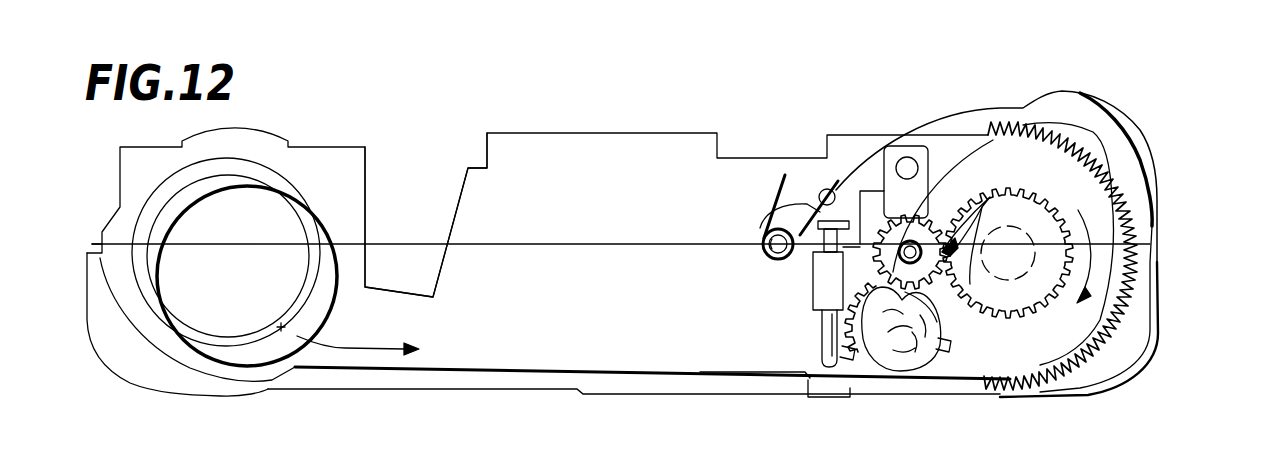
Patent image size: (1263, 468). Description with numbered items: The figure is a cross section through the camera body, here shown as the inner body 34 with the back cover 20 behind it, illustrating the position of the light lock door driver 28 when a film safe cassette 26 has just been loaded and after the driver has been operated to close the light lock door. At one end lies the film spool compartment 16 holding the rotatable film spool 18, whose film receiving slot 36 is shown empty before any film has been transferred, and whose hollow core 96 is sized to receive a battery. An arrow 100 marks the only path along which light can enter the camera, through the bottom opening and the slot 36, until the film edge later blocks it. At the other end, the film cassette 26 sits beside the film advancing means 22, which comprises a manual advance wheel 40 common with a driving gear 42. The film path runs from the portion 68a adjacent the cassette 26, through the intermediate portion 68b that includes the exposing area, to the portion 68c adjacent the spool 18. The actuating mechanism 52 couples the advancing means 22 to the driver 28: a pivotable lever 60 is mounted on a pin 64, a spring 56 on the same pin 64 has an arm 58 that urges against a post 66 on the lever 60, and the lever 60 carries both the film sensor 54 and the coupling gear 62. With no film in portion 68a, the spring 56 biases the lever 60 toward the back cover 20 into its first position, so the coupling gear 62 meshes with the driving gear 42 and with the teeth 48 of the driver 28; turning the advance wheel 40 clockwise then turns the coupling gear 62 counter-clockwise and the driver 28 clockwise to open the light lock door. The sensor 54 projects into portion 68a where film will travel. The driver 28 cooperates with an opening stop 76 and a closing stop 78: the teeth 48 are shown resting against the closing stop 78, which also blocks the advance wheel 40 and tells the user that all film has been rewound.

The film spool compartment 16 is at (132, 177).
The film spool 18 is at (186, 307).
The back cover 20 is at (537, 392).
The film advancing means 22 is at (1083, 135).
The film cassette 26 is at (965, 178).
The light lock door driver 28 is at (900, 366).
The inner body 34 is at (515, 140).
The film receiving slot 36 is at (281, 324).
The manual advance wheel 40 is at (1093, 190).
The driving gear 42 is at (1117, 350).
The teeth 48 is at (885, 378).
The actuating mechanism 52 is at (718, 205).
The film sensor 54 is at (815, 282).
The spring 56 is at (780, 197).
The arm 58 is at (792, 170).
The pivotable lever 60 is at (896, 206).
The coupling gear 62 is at (965, 345).
The pin 64 is at (760, 237).
The post 66 is at (820, 192).
The film path portion 68a is at (808, 358).
The film path portion 68b is at (598, 371).
The film path portion 68c is at (232, 373).
The opening stop 76 is at (925, 378).
The closing stop 78 is at (832, 370).
The hollow core 96 is at (258, 210).
The arrow 100 is at (375, 343).